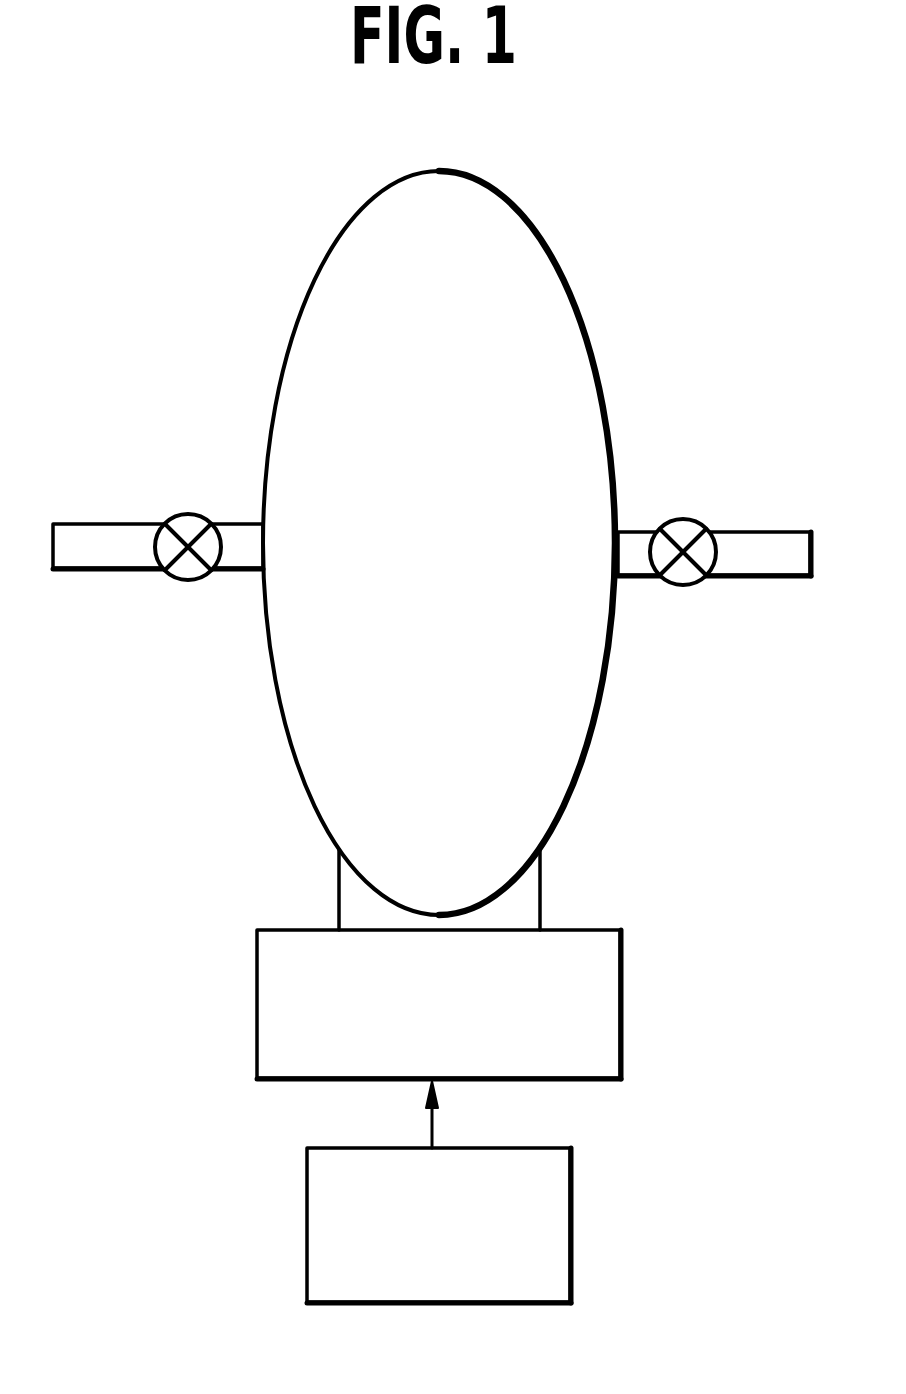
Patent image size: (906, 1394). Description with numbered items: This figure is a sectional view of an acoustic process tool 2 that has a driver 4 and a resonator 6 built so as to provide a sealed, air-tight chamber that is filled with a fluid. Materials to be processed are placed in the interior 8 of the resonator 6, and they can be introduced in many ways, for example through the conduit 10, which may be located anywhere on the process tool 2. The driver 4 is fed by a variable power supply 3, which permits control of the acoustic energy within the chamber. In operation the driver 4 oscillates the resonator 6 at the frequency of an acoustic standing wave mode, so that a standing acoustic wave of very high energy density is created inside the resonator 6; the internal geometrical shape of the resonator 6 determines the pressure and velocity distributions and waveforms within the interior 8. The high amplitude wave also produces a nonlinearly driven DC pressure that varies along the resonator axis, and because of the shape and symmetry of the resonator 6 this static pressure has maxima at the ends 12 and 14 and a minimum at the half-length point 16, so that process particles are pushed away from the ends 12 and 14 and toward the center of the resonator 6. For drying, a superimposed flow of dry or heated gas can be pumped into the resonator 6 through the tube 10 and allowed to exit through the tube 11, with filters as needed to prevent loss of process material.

The acoustic process tool 2 is at (662, 279).
The variable power supply 3 is at (573, 1233).
The driver 4 is at (622, 1001).
The resonator 6 is at (614, 436).
The interior 8 is at (438, 292).
The conduit 10 is at (250, 573).
The tube 11 is at (633, 576).
The end 12 is at (430, 893).
The end 14 is at (389, 218).
The half-length point 16 is at (443, 552).